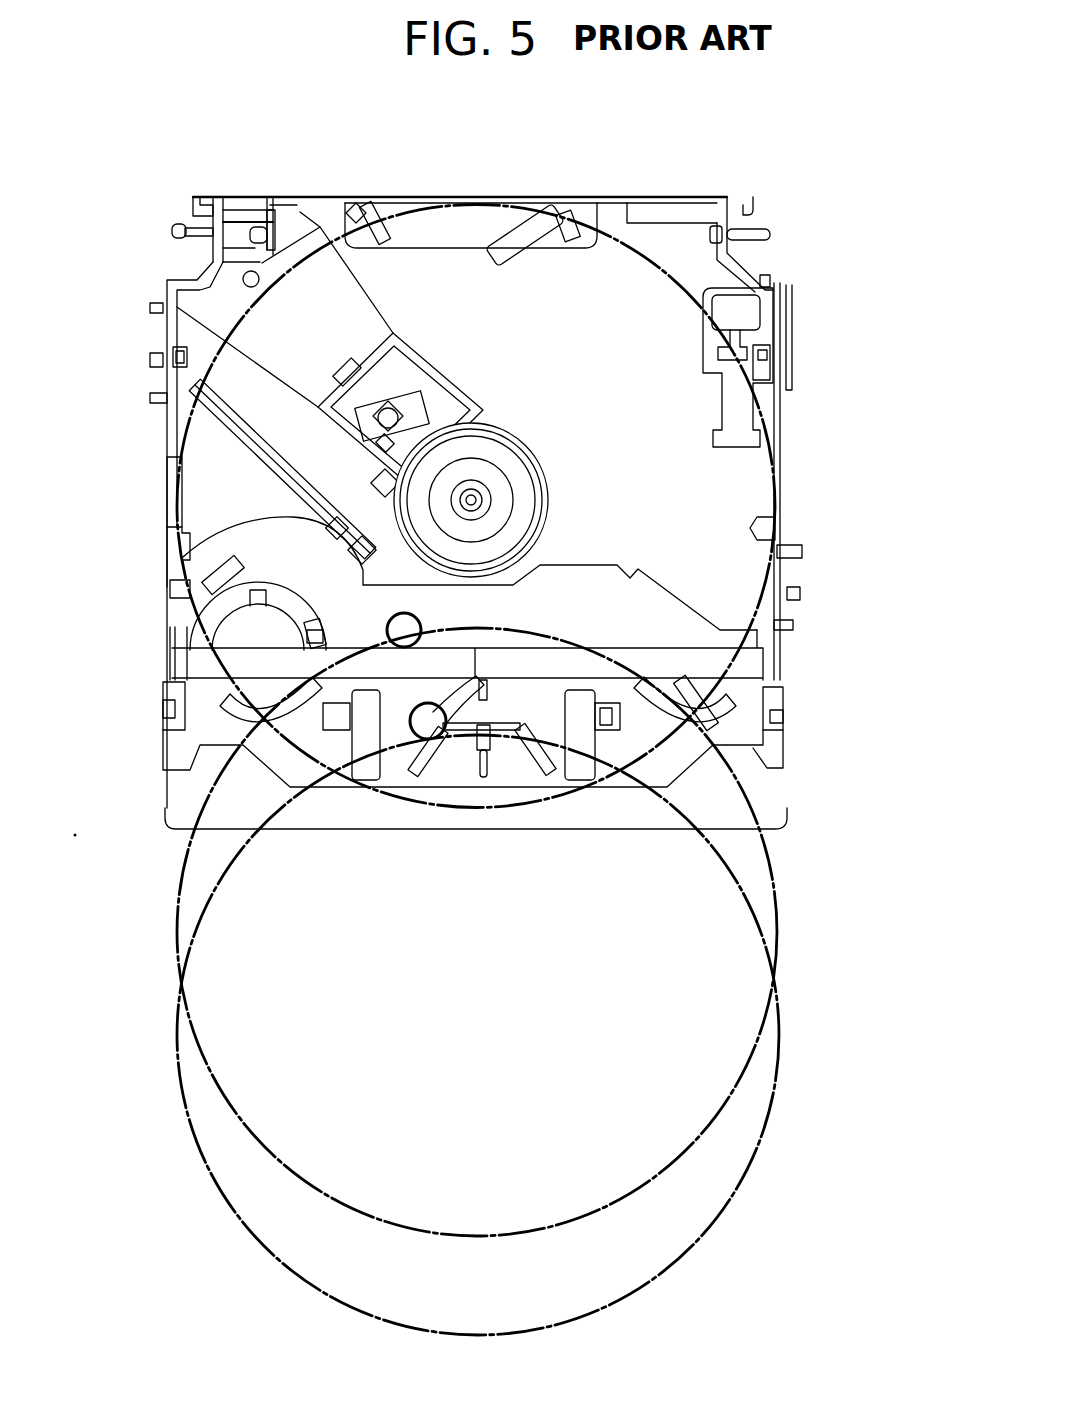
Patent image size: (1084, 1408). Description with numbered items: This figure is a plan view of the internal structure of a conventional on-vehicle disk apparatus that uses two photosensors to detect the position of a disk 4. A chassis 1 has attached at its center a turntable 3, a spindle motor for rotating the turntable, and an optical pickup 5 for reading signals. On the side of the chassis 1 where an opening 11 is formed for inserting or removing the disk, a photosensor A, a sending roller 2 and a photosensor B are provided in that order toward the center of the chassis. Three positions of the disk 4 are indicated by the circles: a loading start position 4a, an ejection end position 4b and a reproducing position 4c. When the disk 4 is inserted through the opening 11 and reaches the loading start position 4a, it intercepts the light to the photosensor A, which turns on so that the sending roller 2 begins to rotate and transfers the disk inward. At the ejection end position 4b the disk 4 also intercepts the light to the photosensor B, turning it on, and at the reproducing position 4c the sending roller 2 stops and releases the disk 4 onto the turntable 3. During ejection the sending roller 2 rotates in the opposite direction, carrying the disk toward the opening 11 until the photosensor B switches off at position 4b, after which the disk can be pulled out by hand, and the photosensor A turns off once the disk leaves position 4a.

The chassis 1 is at (659, 248).
The sending roller 2 is at (748, 663).
The turntable 3 is at (410, 507).
The disk 4 is at (773, 1168).
The loading start position 4a is at (780, 1060).
The ejection end position 4b is at (780, 898).
The reproducing position 4c is at (246, 300).
The optical pickup 5 is at (422, 377).
The opening 11 is at (626, 822).
The photosensor A is at (425, 740).
The photosensor B is at (386, 632).